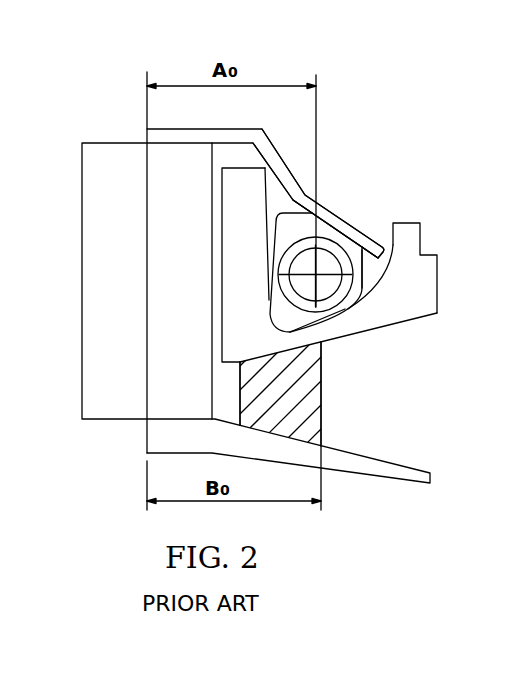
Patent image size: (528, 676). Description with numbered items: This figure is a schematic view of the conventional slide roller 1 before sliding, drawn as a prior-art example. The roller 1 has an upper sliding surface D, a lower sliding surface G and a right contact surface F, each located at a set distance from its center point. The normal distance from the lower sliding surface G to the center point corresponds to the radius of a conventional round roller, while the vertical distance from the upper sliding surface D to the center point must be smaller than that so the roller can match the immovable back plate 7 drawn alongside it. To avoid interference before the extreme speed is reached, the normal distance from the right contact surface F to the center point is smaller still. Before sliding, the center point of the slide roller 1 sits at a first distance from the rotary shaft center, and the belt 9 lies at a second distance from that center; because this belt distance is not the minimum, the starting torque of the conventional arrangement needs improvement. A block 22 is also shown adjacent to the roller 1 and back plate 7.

The conventional slide roller 1 is at (302, 230).
The immovable back plate 7 is at (333, 220).
The upper sliding surface D is at (347, 235).
The support block 22 is at (405, 287).
The right contact surface F is at (370, 281).
The lower sliding surface G is at (322, 322).
The belt 9 is at (322, 415).